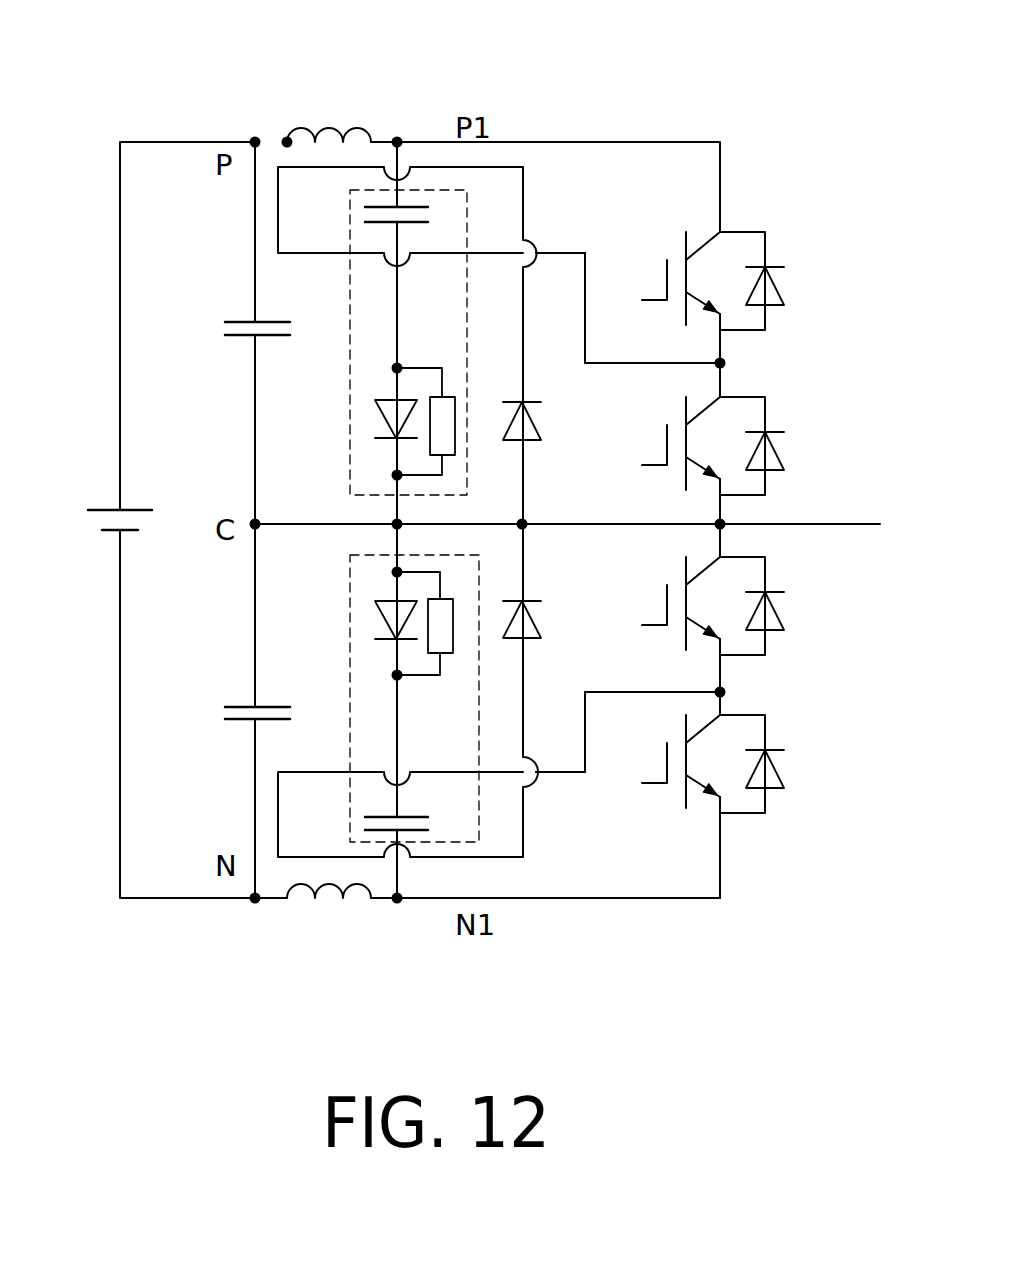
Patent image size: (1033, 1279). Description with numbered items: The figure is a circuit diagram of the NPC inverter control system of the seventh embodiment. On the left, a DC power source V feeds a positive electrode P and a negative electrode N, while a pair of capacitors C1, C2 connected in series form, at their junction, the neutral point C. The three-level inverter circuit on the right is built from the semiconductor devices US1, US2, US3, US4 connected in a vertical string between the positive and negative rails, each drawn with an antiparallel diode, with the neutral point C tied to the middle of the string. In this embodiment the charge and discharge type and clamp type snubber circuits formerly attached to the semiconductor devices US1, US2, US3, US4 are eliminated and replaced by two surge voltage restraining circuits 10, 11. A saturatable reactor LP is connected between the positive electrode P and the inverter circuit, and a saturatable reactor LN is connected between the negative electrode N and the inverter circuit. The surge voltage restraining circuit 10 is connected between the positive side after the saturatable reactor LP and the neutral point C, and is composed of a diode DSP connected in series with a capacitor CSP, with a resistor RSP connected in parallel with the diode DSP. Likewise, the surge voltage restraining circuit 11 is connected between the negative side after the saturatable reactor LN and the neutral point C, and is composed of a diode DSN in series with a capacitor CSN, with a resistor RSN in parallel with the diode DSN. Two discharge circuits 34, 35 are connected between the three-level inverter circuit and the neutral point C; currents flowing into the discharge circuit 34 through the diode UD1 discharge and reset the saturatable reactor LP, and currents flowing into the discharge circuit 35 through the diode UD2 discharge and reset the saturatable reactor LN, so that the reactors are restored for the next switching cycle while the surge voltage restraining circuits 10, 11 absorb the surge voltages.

The surge voltage restraining circuit 10 is at (350, 292).
The surge voltage restraining circuit 11 is at (350, 672).
The discharge circuit 34 is at (556, 188).
The discharge circuit 35 is at (550, 848).
The DC power source V is at (105, 525).
The capacitor C1 is at (225, 330).
The capacitor C2 is at (237, 720).
The saturatable reactor LP is at (295, 177).
The saturatable reactor LN is at (360, 852).
The capacitor CSP is at (427, 212).
The capacitor CSN is at (429, 822).
The diode DSP is at (360, 419).
The diode DSN is at (360, 620).
The resistor RSP is at (449, 429).
The resistor RSN is at (451, 631).
The diode UD1 is at (557, 429).
The diode UD2 is at (557, 625).
The semiconductor device US1 is at (696, 291).
The semiconductor device US2 is at (693, 458).
The semiconductor device US3 is at (693, 624).
The semiconductor device US4 is at (692, 806).